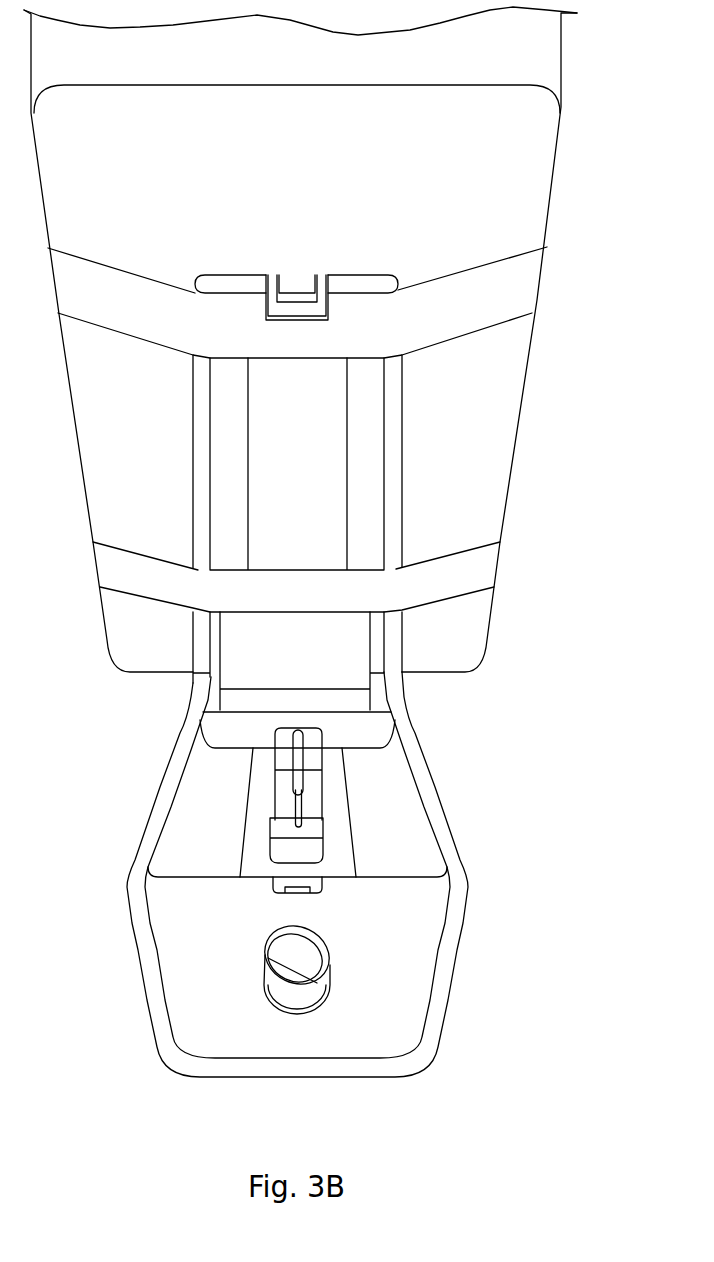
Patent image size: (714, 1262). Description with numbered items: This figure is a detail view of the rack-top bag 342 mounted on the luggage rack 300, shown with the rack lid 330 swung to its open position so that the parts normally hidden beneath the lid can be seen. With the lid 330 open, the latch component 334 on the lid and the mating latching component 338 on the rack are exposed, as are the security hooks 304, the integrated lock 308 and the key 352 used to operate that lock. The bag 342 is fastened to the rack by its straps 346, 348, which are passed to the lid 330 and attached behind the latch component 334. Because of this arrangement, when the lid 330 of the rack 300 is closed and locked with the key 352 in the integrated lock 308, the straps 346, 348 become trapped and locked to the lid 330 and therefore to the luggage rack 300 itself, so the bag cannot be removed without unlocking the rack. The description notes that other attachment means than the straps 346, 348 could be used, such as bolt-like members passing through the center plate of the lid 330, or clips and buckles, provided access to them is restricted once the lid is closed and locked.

The luggage rack 300 is at (402, 713).
The security hooks 304 is at (303, 846).
The integrated lock 308 is at (273, 972).
The rack lid 330 is at (390, 415).
The latch component 334 is at (322, 288).
The latching component 338 is at (310, 893).
The rack-top bag 342 is at (535, 173).
The strap 346 is at (397, 333).
The strap 348 is at (390, 593).
The key 352 is at (307, 960).